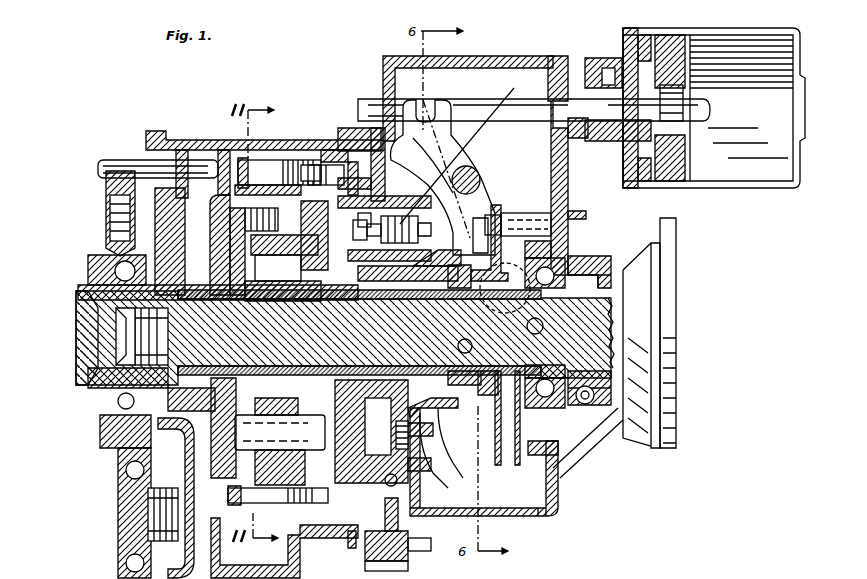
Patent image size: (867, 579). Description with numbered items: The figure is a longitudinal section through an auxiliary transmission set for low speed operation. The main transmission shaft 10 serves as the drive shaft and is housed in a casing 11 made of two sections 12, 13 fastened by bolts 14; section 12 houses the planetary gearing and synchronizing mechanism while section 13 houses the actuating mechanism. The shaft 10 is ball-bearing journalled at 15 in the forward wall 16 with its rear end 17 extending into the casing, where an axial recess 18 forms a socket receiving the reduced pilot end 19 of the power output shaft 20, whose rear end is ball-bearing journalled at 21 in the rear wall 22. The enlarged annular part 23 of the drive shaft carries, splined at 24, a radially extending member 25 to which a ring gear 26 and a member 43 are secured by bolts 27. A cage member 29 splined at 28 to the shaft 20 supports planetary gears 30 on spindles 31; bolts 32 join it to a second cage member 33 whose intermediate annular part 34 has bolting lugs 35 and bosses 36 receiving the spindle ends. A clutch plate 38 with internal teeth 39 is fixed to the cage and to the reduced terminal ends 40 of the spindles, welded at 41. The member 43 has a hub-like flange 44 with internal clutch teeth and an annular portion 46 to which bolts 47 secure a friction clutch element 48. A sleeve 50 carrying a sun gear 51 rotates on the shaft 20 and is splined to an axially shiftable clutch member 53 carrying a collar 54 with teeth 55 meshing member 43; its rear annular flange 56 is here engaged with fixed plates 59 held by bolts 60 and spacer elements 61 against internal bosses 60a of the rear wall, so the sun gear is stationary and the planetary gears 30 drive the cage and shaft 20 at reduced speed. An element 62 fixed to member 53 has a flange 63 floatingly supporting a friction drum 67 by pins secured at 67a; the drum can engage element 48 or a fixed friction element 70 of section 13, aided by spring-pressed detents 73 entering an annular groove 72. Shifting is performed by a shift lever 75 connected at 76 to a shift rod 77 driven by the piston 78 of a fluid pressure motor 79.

The main transmission shaft 10 is at (78, 333).
The casing 11 is at (158, 134).
The casing section 12 is at (323, 128).
The casing section 13 is at (524, 47).
The bolts 14 is at (402, 537).
The ball bearing 15 is at (104, 268).
The forward wall 16 is at (164, 213).
The rear end of drive shaft 17 is at (193, 276).
The axial recess 18 is at (118, 335).
The reduced pilot end 19 is at (132, 316).
The power output shaft 20 is at (326, 297).
The ball bearing 21 is at (562, 250).
The rear wall 22 is at (560, 163).
The annular part 23 is at (172, 272).
The spline 24 is at (147, 428).
The radially extending member 25 is at (140, 484).
The ring gear 26 is at (262, 150).
The bolts 27 is at (292, 134).
The spline 28 is at (212, 299).
The planet gear cage member 29 is at (230, 226).
The planetary gears 30 is at (258, 468).
The spindle 31 is at (280, 441).
The bolts 32 is at (262, 226).
The planet gear cage member 33 is at (262, 246).
The intermediate annular part 34 is at (290, 272).
The bolting lugs 35 is at (232, 187).
The bosses 36 is at (316, 496).
The clutch plate 38 is at (320, 226).
The gear teeth 39 is at (311, 300).
The reduced terminal ends 40 is at (380, 440).
The weld 41 is at (334, 402).
The member 43 is at (343, 172).
The hub-like flange 44 is at (353, 289).
The annular portion 46 is at (346, 158).
The bolts 47 is at (350, 160).
The friction clutch element 48 is at (366, 505).
The sleeve 50 is at (402, 292).
The sun gear 51 is at (254, 298).
The clutch member 53 is at (433, 398).
The collar 54 is at (430, 250).
The clutch teeth 55 is at (370, 297).
The annular flange 56 is at (517, 407).
The plates 59 is at (491, 196).
The bolts 60 is at (578, 212).
The internal bosses 60a is at (530, 207).
The spacer elements 61 is at (503, 204).
The element 62 is at (399, 223).
The circumferential flange 63 is at (470, 163).
The speed-synchronizing member 67 is at (388, 184).
The pin attachment 67a is at (480, 200).
The fixed internal friction element 70 is at (423, 150).
The annular groove 72 is at (376, 456).
The spring-pressed detents 73 is at (405, 500).
The shift lever 75 is at (471, 213).
The connection 76 is at (419, 94).
The shift rod 77 is at (564, 87).
The piston 78 is at (664, 56).
The fluid pressure motor 79 is at (702, 157).